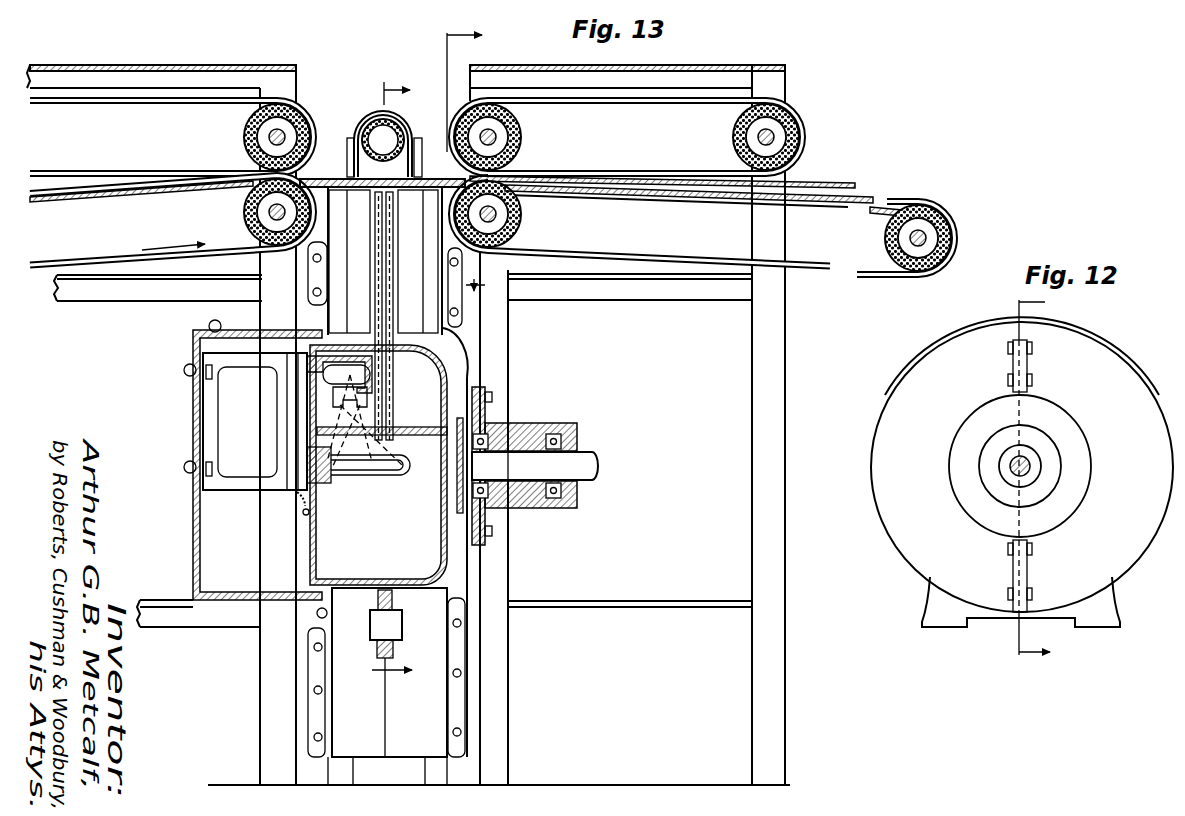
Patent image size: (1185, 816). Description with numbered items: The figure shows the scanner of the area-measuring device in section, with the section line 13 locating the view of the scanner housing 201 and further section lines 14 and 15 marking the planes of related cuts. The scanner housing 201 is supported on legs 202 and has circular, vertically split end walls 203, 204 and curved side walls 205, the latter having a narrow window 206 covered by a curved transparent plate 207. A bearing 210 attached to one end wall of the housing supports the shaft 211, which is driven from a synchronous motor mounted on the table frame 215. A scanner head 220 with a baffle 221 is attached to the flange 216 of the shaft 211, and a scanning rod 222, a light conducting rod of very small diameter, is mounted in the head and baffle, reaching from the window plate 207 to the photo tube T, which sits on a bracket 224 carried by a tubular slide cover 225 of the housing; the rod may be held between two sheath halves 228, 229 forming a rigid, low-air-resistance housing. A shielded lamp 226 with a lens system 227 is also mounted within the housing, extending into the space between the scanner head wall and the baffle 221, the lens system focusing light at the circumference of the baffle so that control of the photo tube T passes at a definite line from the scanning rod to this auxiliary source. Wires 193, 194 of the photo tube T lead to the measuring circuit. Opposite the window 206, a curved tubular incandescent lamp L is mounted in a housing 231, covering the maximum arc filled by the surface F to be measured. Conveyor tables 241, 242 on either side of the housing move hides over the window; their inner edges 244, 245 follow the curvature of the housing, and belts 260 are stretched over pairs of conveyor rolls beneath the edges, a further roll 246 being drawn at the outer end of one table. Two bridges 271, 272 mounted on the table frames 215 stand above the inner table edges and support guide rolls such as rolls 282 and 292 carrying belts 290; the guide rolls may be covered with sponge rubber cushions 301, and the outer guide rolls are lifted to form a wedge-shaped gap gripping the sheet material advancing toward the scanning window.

In FIG. 13, the bridge 271 is at (272, 85).
In FIG. 13, the bridge 272 is at (764, 85).
In FIG. 13, the belts 290 is at (88, 170).
In FIG. 13, the sponge rubber cushions 301 is at (506, 142).
In FIG. 13, the guide roll 282 is at (497, 136).
In FIG. 13, the guide roll 292 is at (762, 136).
In FIG. 13, the conveyor table 242 is at (140, 204).
In FIG. 13, the belts 260 is at (68, 258).
In FIG. 13, the inner edge 245 is at (247, 200).
In FIG. 13, the inner edge 244 is at (526, 200).
In FIG. 13, the conveyor table 241 is at (667, 198).
In FIG. 13, the surface to be measured F is at (827, 183).
In FIG. 13, the belt roller 246 is at (883, 218).
In FIG. 13, the scanning rod 222 is at (418, 181).
In FIG. 13, the window 206 is at (385, 172).
In FIG. 13, the housing 231 is at (370, 110).
In FIG. 13, the transparent plate 207 is at (378, 168).
In FIG. 13, the lamp L is at (400, 126).
In FIG. 13, the section line 14- 14 is at (406, 419).
In FIG. 13, the section line 15- 15 is at (479, 161).
In FIG. 13, the sheath half 229 is at (374, 318).
In FIG. 13, the sheath half 228 is at (393, 322).
In FIG. 13, the tubular slide cover 225 is at (193, 530).
In FIG. 13, the end wall 204 is at (193, 550).
In FIG. 13, the scanner head 220 is at (325, 585).
In FIG. 13, the bracket 224 is at (285, 438).
In FIG. 13, the shielded lamp 226 is at (330, 373).
In FIG. 13, the lens system 227 is at (335, 395).
In FIG. 13, the baffle 221 is at (441, 425).
In FIG. 13, the photo tube T is at (376, 481).
In FIG. 13, the flange 216 is at (458, 500).
In FIG. 13, the wire 193 is at (292, 502).
In FIG. 13, the wire 194 is at (300, 516).
In FIG. 13, the bearing 210 is at (512, 437).
In FIG. 12, the bearing 210 is at (1050, 455).
In FIG. 13, the shaft 211 is at (589, 452).
In FIG. 12, the shaft 211 is at (1032, 468).
In FIG. 13, the table frame 215 is at (758, 586).
In FIG. 13, the end wall 203 is at (340, 676).
In FIG. 13, the scanner housing 201 is at (360, 685).
In FIG. 13, the side walls 205 is at (350, 757).
In FIG. 13, the legs 202 is at (428, 775).
In FIG. 12, the section line 13- 13 is at (1049, 478).